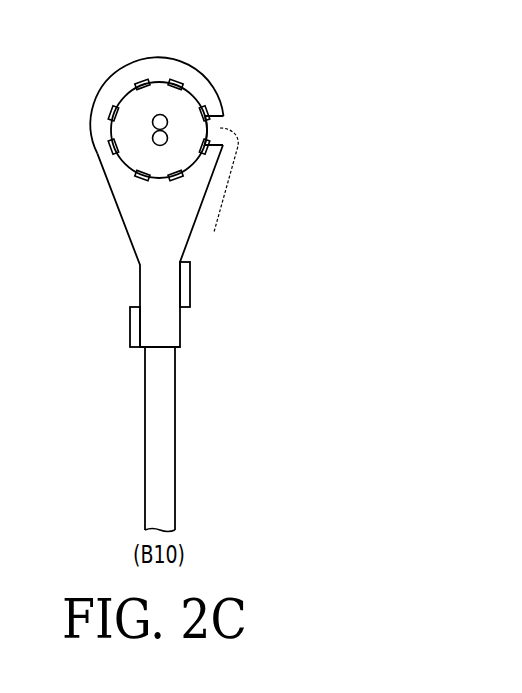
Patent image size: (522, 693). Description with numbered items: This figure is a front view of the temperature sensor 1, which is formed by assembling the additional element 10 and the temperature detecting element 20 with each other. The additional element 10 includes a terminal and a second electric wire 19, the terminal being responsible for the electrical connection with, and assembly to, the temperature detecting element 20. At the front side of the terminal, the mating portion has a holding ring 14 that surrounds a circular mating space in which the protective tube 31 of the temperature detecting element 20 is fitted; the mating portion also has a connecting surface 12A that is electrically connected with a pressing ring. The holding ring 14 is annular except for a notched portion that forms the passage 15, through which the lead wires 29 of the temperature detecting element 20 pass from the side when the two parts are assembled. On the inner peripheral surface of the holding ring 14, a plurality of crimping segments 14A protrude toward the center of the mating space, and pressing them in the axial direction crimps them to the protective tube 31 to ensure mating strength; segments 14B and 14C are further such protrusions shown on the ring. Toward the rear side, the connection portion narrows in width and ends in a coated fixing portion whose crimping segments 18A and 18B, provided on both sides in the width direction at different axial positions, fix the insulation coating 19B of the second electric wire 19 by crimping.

The temperature sensor 1 is at (332, 103).
The additional element 10 is at (228, 208).
The connecting surface 12A is at (115, 172).
The holding ring 14 is at (100, 99).
The crimping segments 14A is at (158, 88).
The engaging protrusion 14B is at (232, 117).
The engaging protrusion 14C is at (178, 81).
The passage 15 is at (214, 232).
The crimping segment 18A is at (190, 283).
The crimping segment 18B is at (130, 325).
The second electric wire 19 is at (175, 415).
The insulation coating 19B is at (175, 385).
The temperature detecting element 20 is at (244, 113).
The lead wires 29 is at (152, 119).
The protective tube 31 is at (204, 92).